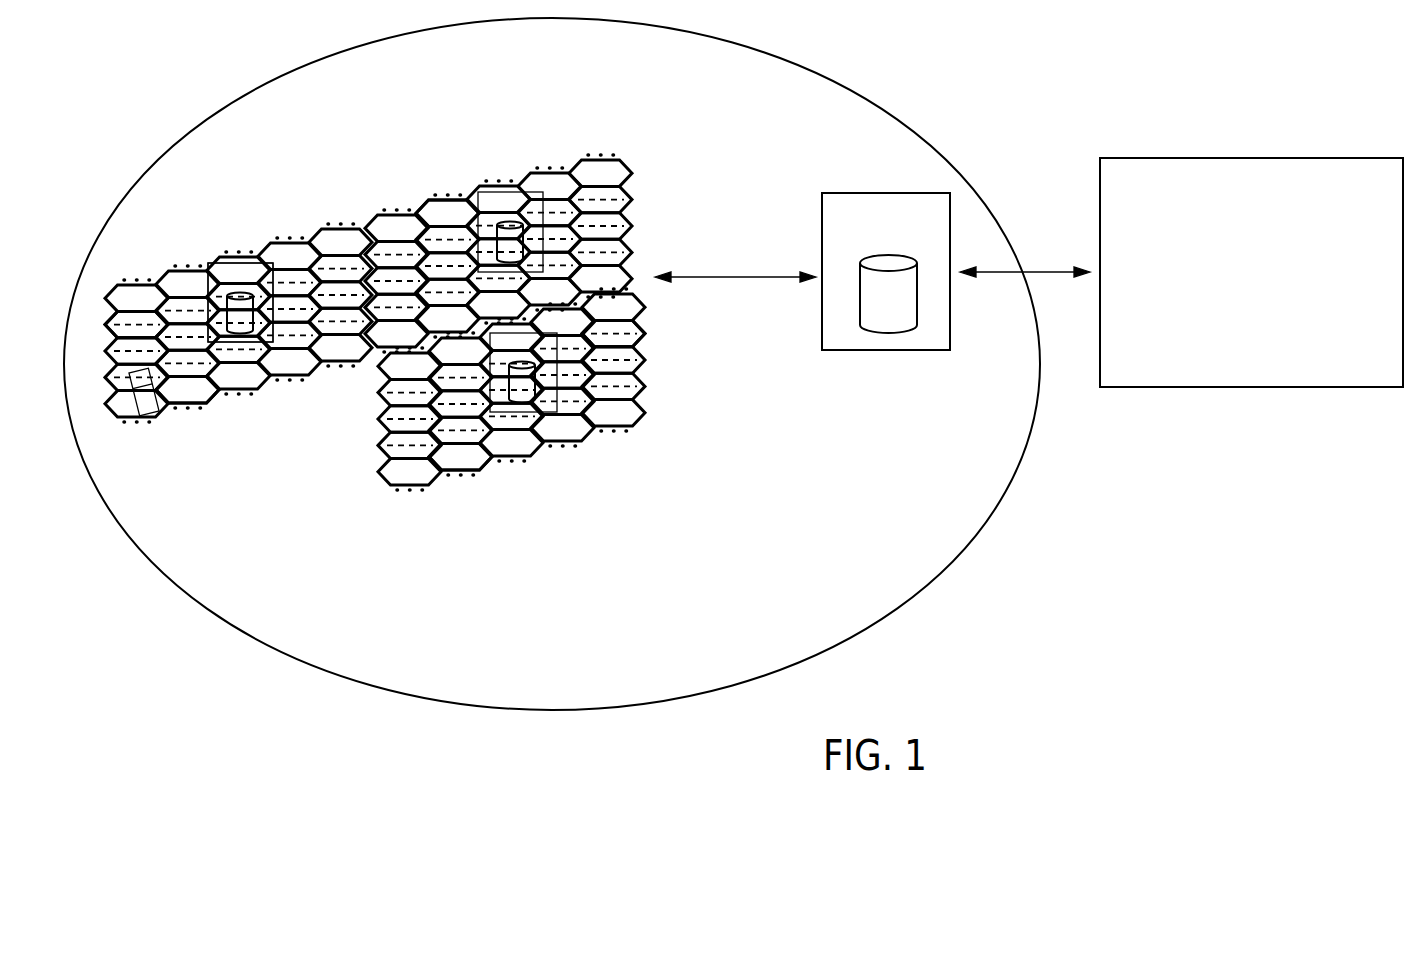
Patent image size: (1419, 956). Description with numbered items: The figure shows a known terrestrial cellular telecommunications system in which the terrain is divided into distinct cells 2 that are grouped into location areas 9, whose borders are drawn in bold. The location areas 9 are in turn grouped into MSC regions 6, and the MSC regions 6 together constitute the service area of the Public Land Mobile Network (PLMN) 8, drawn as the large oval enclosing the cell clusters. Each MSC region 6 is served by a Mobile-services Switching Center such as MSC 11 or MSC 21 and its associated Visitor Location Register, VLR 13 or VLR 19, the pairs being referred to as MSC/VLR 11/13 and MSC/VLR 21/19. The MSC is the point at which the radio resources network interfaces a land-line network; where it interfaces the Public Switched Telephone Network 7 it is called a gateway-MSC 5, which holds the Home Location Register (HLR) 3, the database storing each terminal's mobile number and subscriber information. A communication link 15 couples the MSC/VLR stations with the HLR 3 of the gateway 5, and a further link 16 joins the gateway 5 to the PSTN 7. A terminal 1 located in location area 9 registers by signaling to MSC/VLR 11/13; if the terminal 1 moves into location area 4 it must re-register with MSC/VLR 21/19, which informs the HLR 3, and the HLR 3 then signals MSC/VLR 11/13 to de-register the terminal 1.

The terminal 1 is at (130, 356).
The cell 2 is at (137, 327).
The Home Location Register (HLR) 3 is at (898, 325).
The location area 4 is at (450, 217).
The gateway-MSC (GW-MSC) 5 is at (840, 242).
The MSC region 6 is at (362, 210).
The public switched telephone network (PSTN) 7 is at (1257, 213).
The Public Land Mobile Network (PLMN) 8 is at (220, 625).
The location area 9 is at (172, 393).
The Mobile-services Switching Center (MSC) 11 is at (244, 270).
The Visitor Location Register (VLR) 13 is at (263, 343).
The communication link 15 is at (753, 277).
The trunk link 16 is at (1033, 270).
The Visitor Location Register (VLR) 19 is at (547, 232).
The Mobile-services Switching Center (MSC) 21 is at (507, 185).